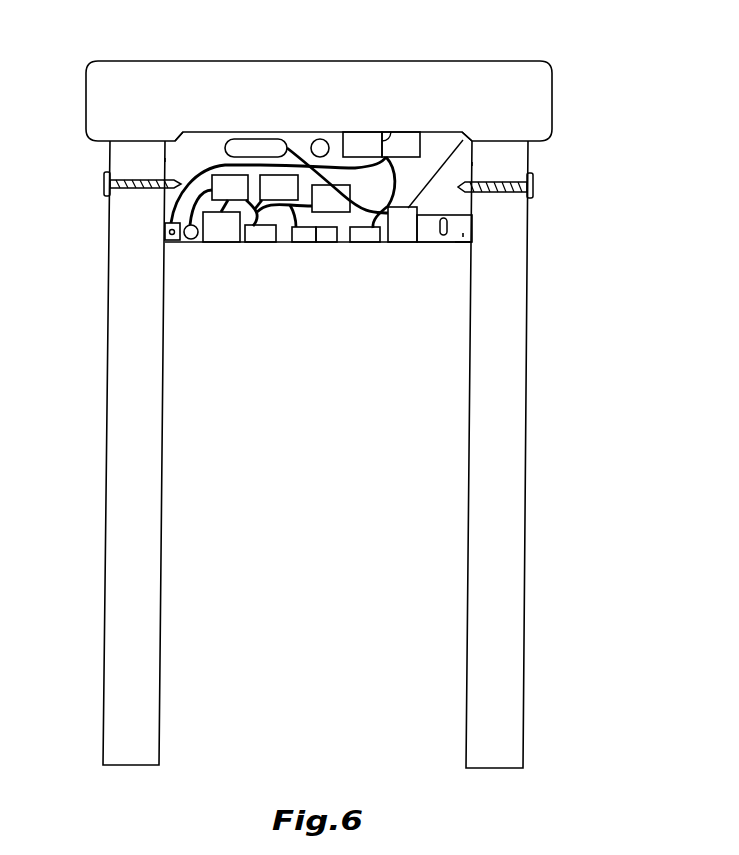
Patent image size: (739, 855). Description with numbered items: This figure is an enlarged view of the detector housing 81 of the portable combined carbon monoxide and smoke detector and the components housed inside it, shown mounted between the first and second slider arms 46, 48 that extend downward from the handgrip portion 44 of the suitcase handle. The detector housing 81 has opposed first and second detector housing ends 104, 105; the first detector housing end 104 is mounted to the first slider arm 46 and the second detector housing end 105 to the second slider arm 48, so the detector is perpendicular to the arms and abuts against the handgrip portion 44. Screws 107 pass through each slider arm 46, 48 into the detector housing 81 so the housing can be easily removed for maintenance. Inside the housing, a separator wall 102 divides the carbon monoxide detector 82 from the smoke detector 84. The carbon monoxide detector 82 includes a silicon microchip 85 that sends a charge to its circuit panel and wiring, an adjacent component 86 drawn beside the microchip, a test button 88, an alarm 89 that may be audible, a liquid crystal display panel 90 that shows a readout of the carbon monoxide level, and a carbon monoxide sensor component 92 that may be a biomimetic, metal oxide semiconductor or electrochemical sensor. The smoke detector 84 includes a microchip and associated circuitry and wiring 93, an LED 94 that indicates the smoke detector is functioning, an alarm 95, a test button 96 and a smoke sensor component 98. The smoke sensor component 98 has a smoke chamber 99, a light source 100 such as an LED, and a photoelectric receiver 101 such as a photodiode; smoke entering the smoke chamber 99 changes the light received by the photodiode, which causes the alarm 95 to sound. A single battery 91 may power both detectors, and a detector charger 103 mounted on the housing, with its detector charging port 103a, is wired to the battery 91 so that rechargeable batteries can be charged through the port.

The handgrip portion 44 is at (133, 72).
The first slider arm 46 is at (118, 315).
The second slider arm 48 is at (515, 352).
The detector housing 81 is at (307, 243).
The carbon monoxide detector 82 is at (193, 145).
The smoke detector 84 is at (435, 147).
The silicon microchip 85 is at (228, 187).
The component 86 is at (287, 185).
The test button 88 is at (191, 243).
The alarm 89 is at (360, 142).
The liquid crystal display panel 90 is at (260, 243).
The battery 91 is at (218, 242).
The carbon monoxide sensor component 92 is at (328, 243).
The microchip and associated circuitry and wiring 93 is at (463, 140).
The LED 94 is at (424, 243).
The alarm 95 is at (371, 243).
The test button 96 is at (265, 147).
The smoke sensor component 98 is at (463, 225).
The smoke chamber 99 is at (463, 235).
The light source 100 is at (457, 243).
The photoelectric receiver 101 is at (443, 217).
The separator wall 102 is at (397, 143).
The detector charger 103 is at (165, 256).
The detector charging port 103a is at (165, 230).
The first detector housing end 104 is at (165, 160).
The second detector housing end 105 is at (472, 164).
The screw 107 is at (105, 179).